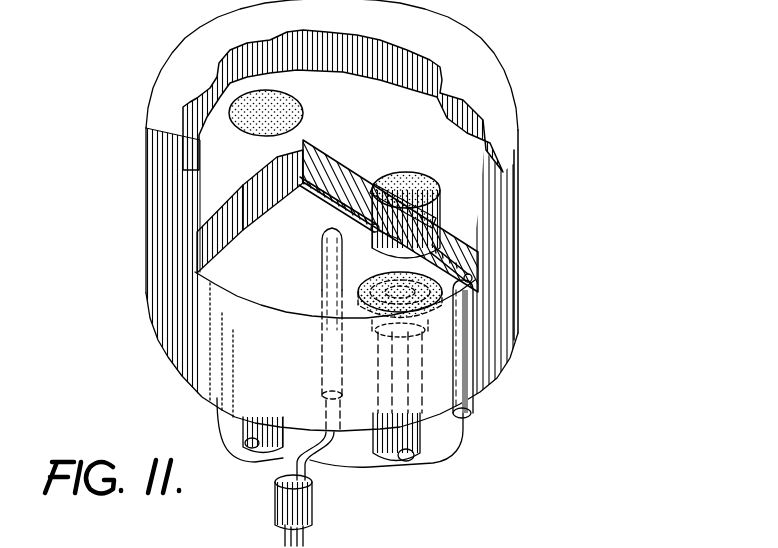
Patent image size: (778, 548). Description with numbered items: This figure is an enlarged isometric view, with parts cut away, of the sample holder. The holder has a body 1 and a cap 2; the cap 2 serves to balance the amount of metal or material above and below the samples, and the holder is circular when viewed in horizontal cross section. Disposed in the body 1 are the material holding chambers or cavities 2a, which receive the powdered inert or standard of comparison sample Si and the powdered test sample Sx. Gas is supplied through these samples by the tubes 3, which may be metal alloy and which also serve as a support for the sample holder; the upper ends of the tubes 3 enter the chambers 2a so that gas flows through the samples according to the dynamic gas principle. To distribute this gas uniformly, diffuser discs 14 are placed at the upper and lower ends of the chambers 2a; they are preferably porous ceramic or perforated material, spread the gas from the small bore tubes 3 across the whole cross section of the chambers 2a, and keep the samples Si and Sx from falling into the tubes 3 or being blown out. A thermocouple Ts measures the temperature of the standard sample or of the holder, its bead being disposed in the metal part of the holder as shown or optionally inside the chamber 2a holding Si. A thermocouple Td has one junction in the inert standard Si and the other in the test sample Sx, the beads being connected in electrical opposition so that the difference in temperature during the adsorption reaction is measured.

The body 1 is at (167, 273).
The cap 2 is at (163, 182).
The material holding chambers or cavities 2a is at (480, 256).
The tubes 3 is at (412, 433).
The diffuser discs 14 is at (432, 190).
The inert or standard of comparison sample Si is at (292, 118).
The test sample Sx is at (412, 230).
The thermocouple Td is at (414, 246).
The thermocouple Ts is at (324, 247).